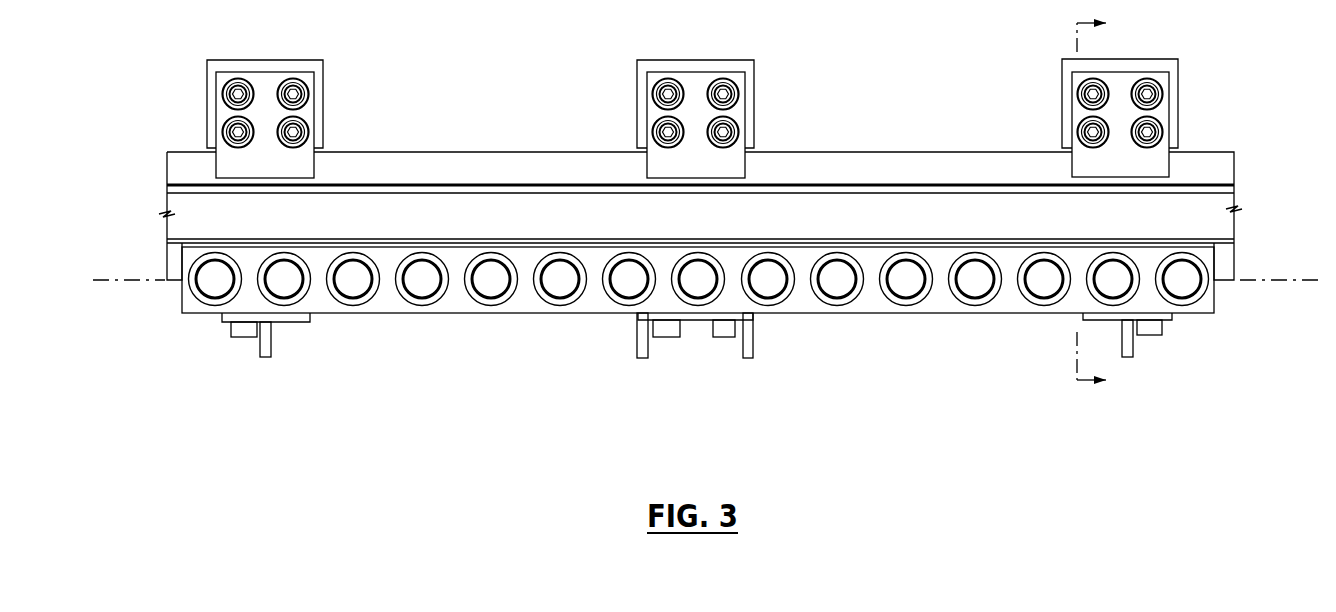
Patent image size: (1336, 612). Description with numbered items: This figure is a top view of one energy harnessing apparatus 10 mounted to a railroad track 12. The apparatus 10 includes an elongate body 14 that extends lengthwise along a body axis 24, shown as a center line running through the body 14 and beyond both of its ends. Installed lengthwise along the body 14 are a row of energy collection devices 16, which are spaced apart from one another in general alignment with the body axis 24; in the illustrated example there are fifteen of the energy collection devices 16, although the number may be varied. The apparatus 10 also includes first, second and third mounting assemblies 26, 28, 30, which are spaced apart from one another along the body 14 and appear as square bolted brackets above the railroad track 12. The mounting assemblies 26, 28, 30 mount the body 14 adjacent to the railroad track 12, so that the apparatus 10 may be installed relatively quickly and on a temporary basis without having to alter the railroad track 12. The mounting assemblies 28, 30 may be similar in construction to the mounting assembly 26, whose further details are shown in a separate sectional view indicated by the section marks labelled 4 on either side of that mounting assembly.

The energy harnessing apparatus 10 is at (247, 349).
The railroad track 12 is at (459, 151).
The elongate body 14 is at (455, 303).
The energy collection devices 16 is at (834, 308).
The body axis 24 is at (140, 283).
The first mounting assembly 26 is at (1186, 90).
The second mounting assembly 28 is at (761, 92).
The third mounting assembly 30 is at (331, 92).
The section line 4- 4 is at (1105, 201).